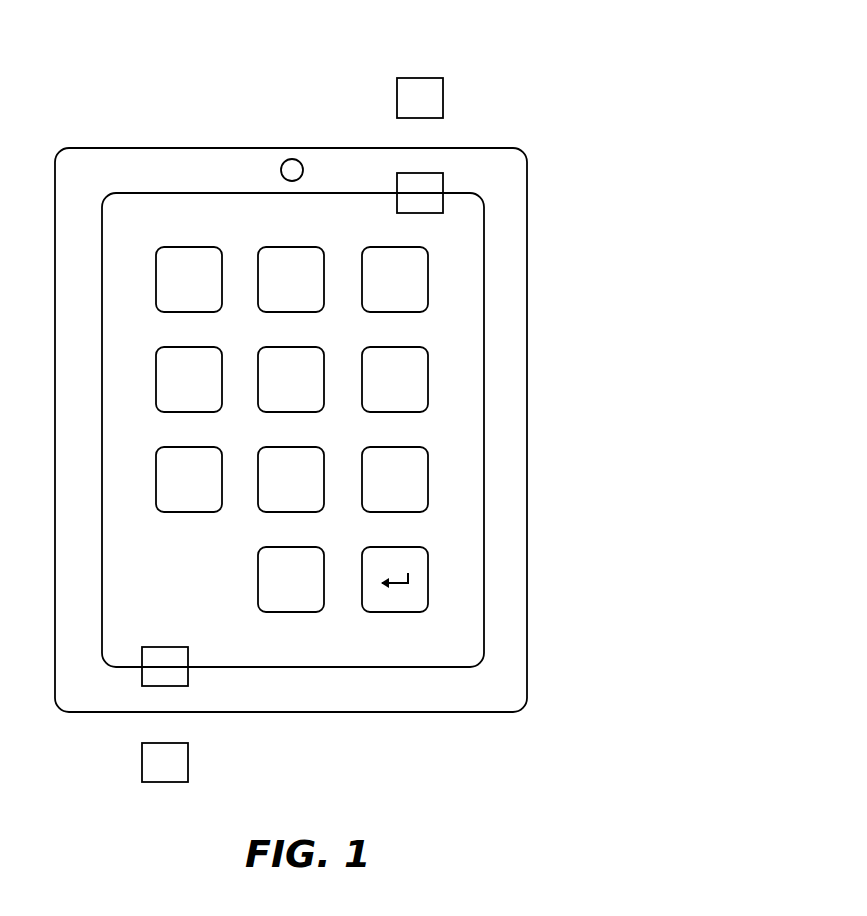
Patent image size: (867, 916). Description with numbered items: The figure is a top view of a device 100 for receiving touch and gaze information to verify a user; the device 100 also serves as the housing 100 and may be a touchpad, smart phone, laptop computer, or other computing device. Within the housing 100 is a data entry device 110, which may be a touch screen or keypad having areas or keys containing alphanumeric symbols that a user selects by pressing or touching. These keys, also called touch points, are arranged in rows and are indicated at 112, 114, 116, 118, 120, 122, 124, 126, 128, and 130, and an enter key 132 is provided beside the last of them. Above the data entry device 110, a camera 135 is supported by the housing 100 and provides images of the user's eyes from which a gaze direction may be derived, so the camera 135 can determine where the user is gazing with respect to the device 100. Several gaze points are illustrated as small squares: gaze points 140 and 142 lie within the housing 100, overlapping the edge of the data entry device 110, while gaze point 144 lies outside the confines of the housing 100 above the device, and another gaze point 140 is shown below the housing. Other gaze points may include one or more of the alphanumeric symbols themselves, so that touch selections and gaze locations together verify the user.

The device 100 is at (240, 148).
The data entry device 110 is at (215, 193).
The key 112 is at (190, 247).
The key 114 is at (292, 247).
The key 116 is at (396, 247).
The key 118 is at (190, 347).
The key 120 is at (292, 347).
The key 122 is at (396, 347).
The key 124 is at (190, 447).
The key 126 is at (292, 447).
The key 128 is at (396, 447).
The key 130 is at (292, 547).
The enter key 132 is at (396, 547).
The camera 135 is at (304, 170).
The gaze point 140 is at (422, 173).
The gaze point 142 is at (165, 647).
The gaze point 144 is at (420, 78).